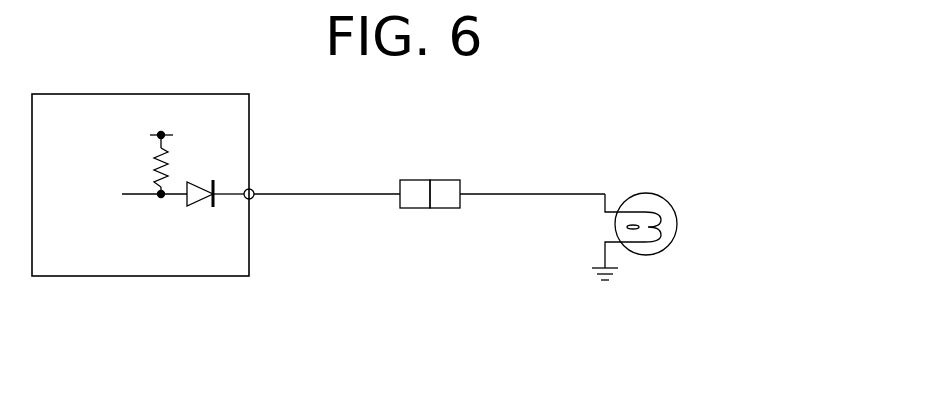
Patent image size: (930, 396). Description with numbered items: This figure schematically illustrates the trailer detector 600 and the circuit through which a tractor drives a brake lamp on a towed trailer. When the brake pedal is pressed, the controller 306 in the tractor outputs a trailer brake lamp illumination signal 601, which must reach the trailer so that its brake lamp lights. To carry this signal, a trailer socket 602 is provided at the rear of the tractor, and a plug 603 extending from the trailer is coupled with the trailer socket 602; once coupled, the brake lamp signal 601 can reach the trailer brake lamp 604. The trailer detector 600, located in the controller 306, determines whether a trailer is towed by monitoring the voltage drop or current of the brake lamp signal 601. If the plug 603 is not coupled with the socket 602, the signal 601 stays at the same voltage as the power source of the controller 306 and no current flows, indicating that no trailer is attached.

The controller 306 is at (183, 277).
The trailer detector 600 is at (274, 168).
The trailer brake lamp illumination signal 601 is at (133, 199).
The trailer socket 602 is at (415, 209).
The plug 603 is at (462, 209).
The trailer brake lamp 604 is at (707, 192).